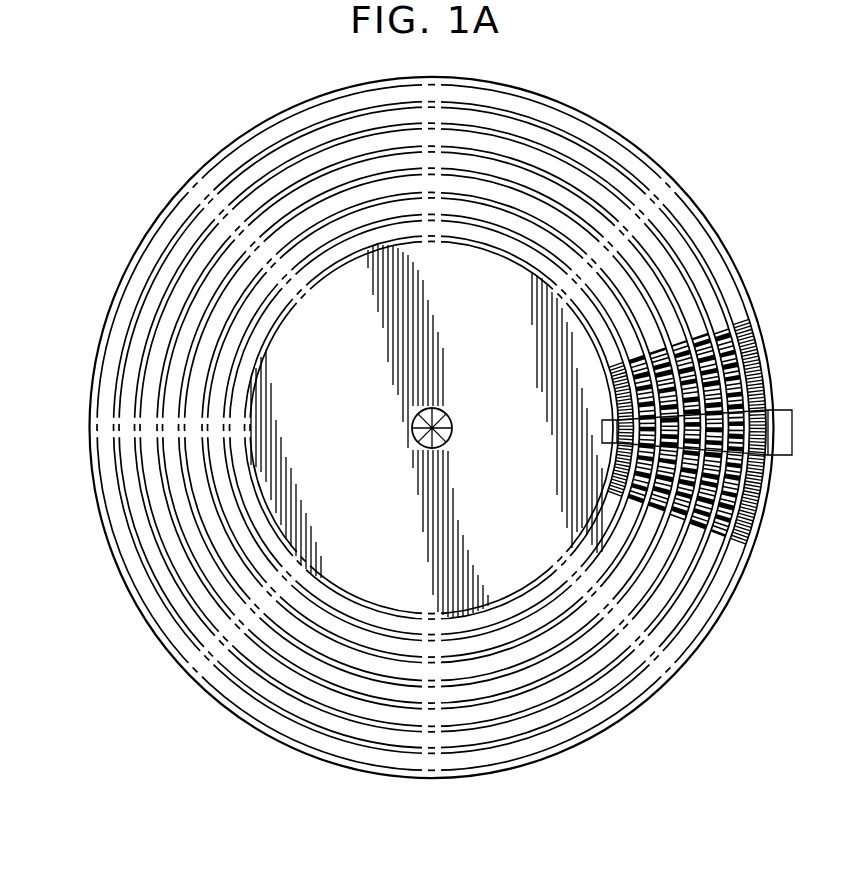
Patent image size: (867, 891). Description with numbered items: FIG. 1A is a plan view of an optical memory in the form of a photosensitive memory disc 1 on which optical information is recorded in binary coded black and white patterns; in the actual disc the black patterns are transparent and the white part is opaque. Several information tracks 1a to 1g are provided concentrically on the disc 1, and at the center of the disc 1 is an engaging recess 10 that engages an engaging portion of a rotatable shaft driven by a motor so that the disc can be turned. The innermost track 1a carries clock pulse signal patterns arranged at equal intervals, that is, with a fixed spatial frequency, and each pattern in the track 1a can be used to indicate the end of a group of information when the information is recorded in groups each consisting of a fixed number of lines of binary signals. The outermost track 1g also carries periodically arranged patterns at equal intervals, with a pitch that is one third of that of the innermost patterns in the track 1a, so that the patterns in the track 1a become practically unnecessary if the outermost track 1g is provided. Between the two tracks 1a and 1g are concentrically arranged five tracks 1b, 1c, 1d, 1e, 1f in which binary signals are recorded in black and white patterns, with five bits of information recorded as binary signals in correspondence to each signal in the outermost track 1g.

The photosensitive memory disc 1 is at (594, 110).
The innermost track 1a is at (613, 371).
The information track 1b is at (634, 361).
The information track 1c is at (657, 354).
The information track 1d is at (680, 346).
The information track 1e is at (698, 342).
The information track 1f is at (722, 337).
The outermost track 1g is at (749, 328).
The engaging recess 10 is at (446, 420).